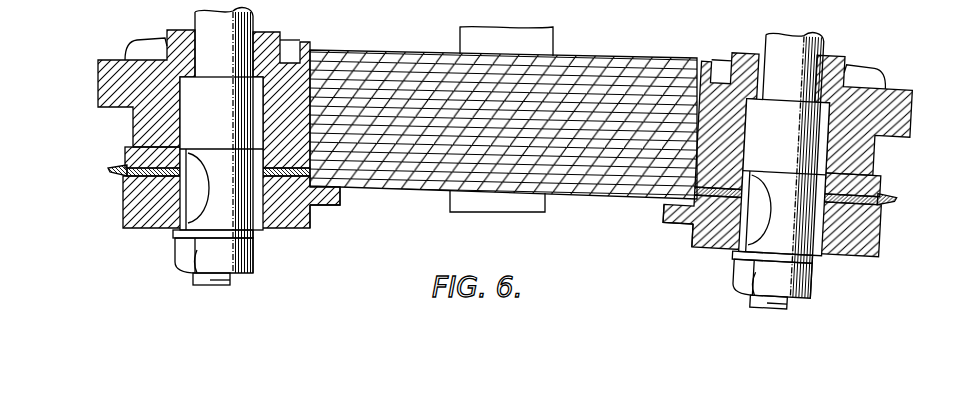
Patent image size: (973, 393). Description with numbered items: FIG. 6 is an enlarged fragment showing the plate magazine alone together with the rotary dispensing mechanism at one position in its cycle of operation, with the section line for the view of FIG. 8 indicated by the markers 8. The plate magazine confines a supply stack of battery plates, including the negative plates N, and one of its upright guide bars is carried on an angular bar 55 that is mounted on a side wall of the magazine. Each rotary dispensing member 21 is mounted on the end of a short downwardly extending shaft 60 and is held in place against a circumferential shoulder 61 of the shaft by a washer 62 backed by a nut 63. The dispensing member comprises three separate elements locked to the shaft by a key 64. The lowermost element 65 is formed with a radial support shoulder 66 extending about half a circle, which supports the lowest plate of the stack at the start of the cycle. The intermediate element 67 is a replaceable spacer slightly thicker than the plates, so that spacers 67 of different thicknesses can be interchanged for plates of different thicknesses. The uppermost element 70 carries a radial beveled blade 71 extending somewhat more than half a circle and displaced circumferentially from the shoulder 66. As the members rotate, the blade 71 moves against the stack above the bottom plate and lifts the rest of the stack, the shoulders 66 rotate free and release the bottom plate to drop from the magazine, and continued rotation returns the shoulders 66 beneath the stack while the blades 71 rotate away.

The rotary dispensing member 21 is at (285, 235).
The negative plate N is at (408, 52).
The angular bar 55 is at (548, 41).
The shaft 60 is at (203, 16).
The circumferential shoulder 61 is at (212, 148).
The washer 62 is at (207, 258).
The nut 63 is at (177, 267).
The key 64 is at (175, 232).
The lowermost element 65 is at (308, 211).
The radial support shoulder 66 is at (338, 200).
The intermediate element 67 is at (132, 177).
The uppermost element 70 is at (125, 158).
The radial beveled blade 71 is at (108, 170).
The section line 8- 8 is at (105, 143).